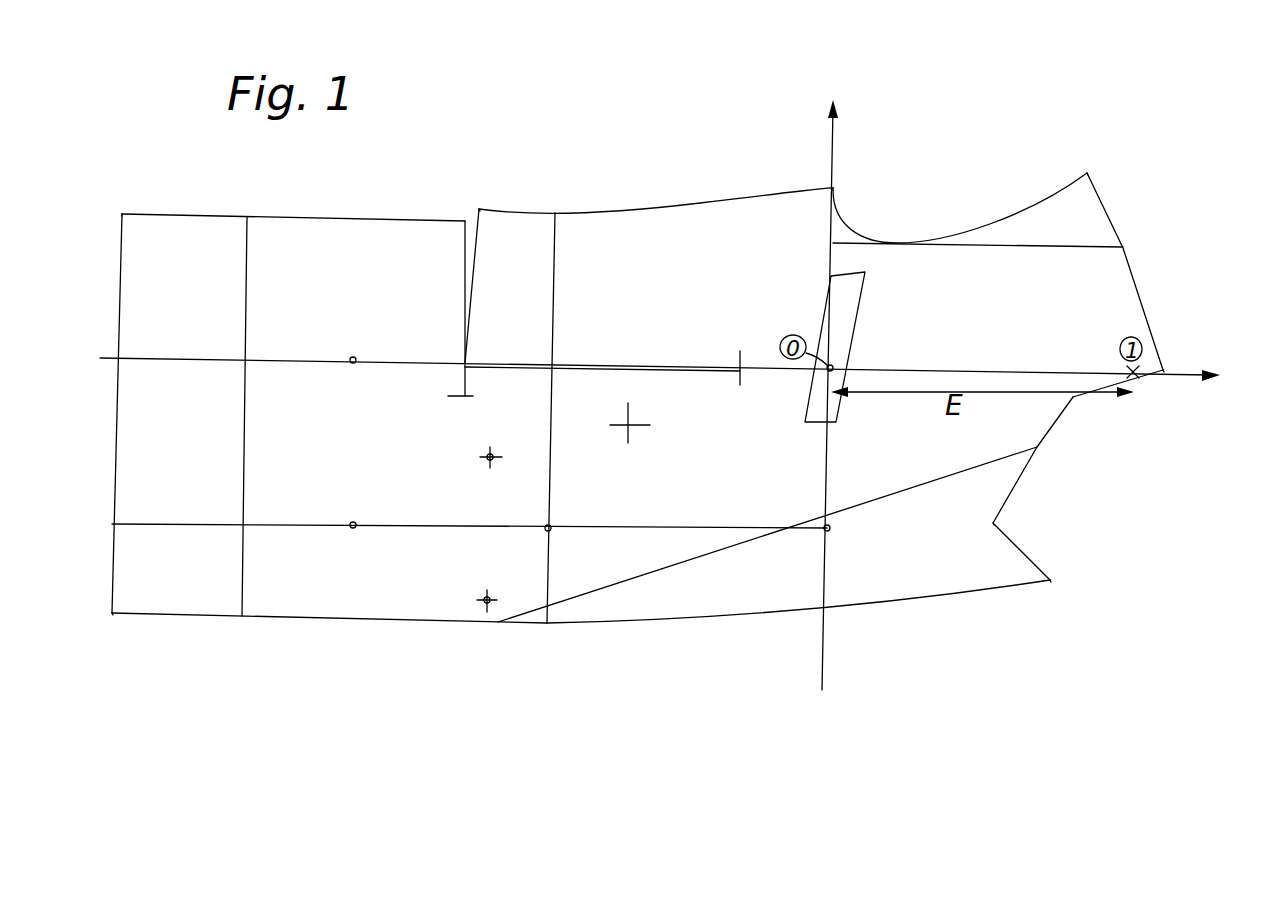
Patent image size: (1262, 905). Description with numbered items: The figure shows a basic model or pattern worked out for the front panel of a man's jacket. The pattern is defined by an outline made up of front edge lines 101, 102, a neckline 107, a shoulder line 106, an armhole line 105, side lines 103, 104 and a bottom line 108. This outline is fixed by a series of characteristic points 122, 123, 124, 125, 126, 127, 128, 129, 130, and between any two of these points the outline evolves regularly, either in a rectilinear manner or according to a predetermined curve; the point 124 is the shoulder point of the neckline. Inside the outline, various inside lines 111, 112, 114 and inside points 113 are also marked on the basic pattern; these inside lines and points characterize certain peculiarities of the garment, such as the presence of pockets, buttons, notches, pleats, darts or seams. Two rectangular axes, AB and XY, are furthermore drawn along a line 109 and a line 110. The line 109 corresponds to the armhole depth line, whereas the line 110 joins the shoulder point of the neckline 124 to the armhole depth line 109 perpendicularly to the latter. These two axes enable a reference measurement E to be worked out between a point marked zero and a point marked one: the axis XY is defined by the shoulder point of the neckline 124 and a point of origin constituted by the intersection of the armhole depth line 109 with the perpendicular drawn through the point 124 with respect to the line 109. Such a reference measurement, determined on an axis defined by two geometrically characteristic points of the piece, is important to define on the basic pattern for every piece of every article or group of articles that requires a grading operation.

The front edge line 101 is at (310, 622).
The front edge line 102 is at (733, 620).
The side line 103 is at (365, 217).
The side line 104 is at (638, 213).
The armhole line 105 is at (963, 230).
The shoulder line 106 is at (1137, 267).
The neckline 107 is at (1023, 480).
The bottom line 108 is at (113, 482).
The armhole depth line 109 is at (830, 453).
The line joining shoulder point to armhole depth line 110 is at (967, 367).
The inside line 111 is at (860, 317).
The inside line 112 is at (470, 272).
The inside point 113 is at (355, 357).
The inside line 114 is at (245, 450).
The characteristic point 122 is at (833, 188).
The characteristic point 123 is at (1087, 173).
The shoulder point of the neckline 124 is at (1167, 366).
The characteristic point 125 is at (1077, 397).
The characteristic point 126 is at (993, 523).
The characteristic point 127 is at (1052, 580).
The characteristic point 128 is at (110, 613).
The characteristic point 129 is at (120, 212).
The characteristic point 130 is at (475, 228).